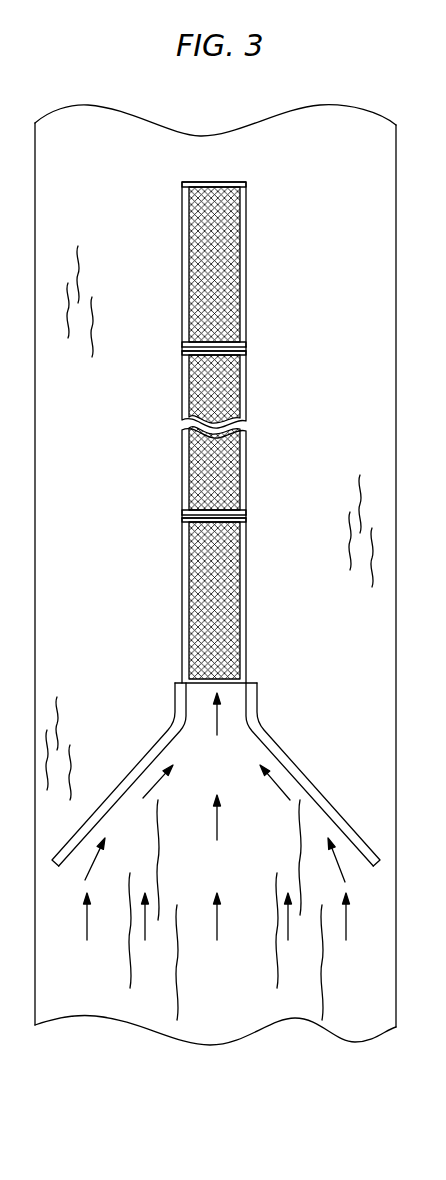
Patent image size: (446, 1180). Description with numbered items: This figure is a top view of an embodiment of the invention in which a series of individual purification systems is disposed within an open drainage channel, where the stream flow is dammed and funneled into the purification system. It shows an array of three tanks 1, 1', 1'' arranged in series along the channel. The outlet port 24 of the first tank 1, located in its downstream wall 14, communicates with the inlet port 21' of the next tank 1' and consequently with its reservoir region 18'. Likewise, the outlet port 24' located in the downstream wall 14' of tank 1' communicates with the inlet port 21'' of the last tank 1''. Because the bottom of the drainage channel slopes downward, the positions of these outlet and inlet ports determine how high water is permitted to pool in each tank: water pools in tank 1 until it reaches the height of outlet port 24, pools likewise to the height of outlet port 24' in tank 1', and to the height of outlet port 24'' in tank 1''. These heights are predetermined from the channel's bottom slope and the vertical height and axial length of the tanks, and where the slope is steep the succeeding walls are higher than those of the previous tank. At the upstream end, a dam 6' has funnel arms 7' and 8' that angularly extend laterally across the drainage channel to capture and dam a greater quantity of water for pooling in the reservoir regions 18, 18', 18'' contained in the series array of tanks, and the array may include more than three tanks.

The tank 1 is at (238, 600).
The tank 1' is at (237, 471).
The tank 1'' is at (237, 264).
The reservoir region 18 is at (177, 600).
The reservoir region 18' is at (170, 397).
The reservoir region 18'' is at (171, 264).
The inlet port 21' is at (170, 511).
The inlet port 21'' is at (184, 342).
The outlet port 24 is at (171, 543).
The outlet port 24' is at (243, 338).
The outlet port 24'' is at (218, 171).
The downstream wall 14 is at (237, 516).
The downstream wall 14' is at (184, 369).
The dam 6' is at (216, 774).
The funnel arm 7' is at (318, 774).
The funnel arm 8' is at (113, 774).